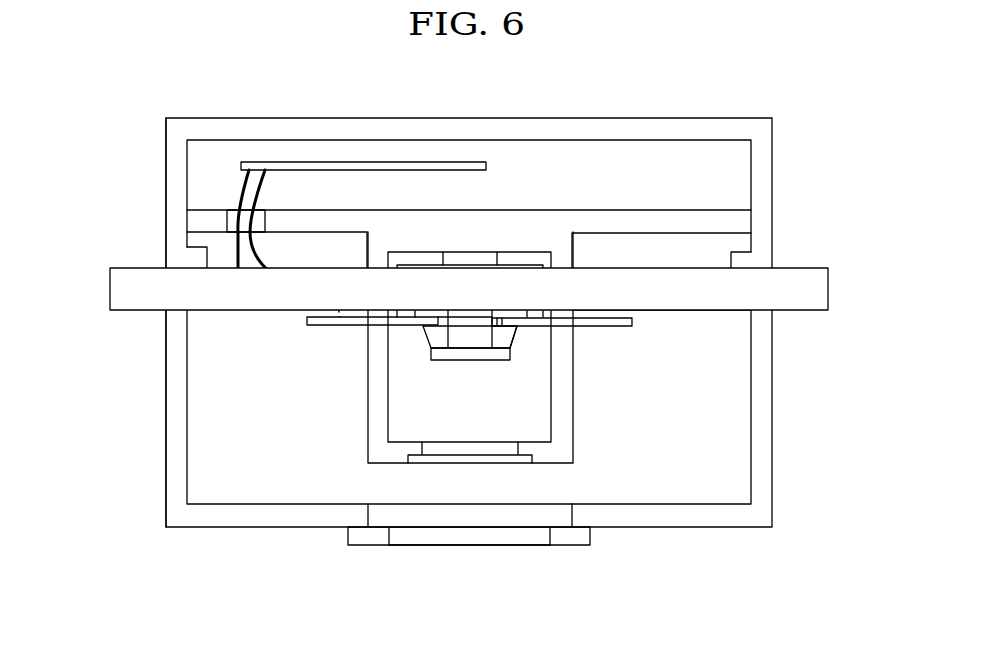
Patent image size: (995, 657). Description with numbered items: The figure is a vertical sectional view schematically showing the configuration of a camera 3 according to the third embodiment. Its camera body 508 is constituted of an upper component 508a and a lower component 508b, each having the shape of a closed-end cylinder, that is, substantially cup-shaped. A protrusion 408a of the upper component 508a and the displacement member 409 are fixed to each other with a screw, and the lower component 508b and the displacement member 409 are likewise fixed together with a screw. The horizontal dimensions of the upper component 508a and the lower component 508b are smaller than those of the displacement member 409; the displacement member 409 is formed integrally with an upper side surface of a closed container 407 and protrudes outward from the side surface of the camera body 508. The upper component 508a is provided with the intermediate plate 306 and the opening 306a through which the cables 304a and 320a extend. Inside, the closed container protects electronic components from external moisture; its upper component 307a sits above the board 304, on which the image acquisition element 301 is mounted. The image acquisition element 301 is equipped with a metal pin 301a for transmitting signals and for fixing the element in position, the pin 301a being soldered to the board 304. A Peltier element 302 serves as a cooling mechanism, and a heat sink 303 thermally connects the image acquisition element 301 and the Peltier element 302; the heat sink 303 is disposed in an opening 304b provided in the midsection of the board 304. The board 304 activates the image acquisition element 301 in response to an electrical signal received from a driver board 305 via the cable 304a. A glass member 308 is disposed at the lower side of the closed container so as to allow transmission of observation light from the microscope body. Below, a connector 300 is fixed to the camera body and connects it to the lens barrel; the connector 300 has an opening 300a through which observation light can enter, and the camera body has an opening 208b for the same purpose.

The camera 3 is at (746, 94).
The opening 208b is at (400, 512).
The connector 300 is at (573, 548).
The opening 300a is at (517, 533).
The image acquisition element 301 is at (450, 362).
The metal pin 301a is at (513, 340).
The Peltier element 302 is at (485, 260).
The heat sink 303 is at (532, 277).
The board 304 is at (635, 323).
The cable 304a is at (255, 255).
The opening 304b is at (515, 323).
The driver board 305 is at (313, 162).
The intermediate plate 306 is at (725, 210).
The opening 306a is at (232, 210).
The upper component 307a is at (368, 385).
The glass member 308 is at (433, 458).
The cable 320a is at (235, 242).
The closed container 407 is at (432, 331).
The protrusion 408a is at (195, 258).
The displacement member 409 is at (212, 310).
The camera body 508 is at (753, 530).
The upper component 508a is at (166, 143).
The lower component 508b is at (166, 450).